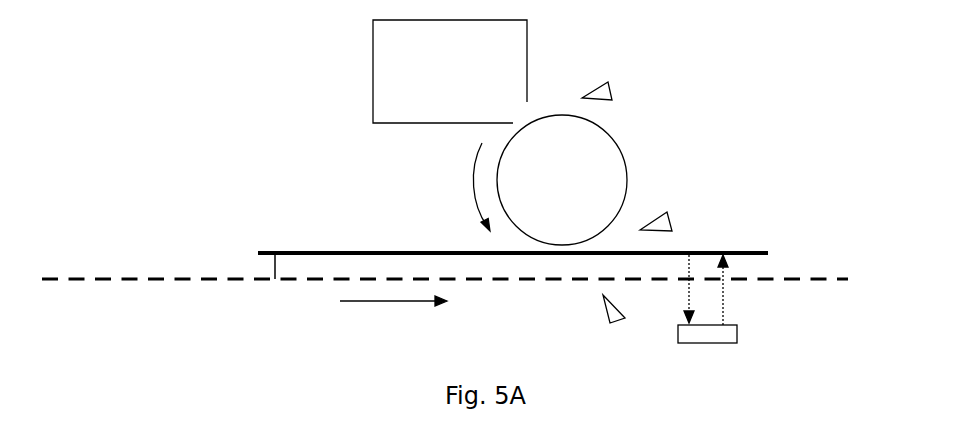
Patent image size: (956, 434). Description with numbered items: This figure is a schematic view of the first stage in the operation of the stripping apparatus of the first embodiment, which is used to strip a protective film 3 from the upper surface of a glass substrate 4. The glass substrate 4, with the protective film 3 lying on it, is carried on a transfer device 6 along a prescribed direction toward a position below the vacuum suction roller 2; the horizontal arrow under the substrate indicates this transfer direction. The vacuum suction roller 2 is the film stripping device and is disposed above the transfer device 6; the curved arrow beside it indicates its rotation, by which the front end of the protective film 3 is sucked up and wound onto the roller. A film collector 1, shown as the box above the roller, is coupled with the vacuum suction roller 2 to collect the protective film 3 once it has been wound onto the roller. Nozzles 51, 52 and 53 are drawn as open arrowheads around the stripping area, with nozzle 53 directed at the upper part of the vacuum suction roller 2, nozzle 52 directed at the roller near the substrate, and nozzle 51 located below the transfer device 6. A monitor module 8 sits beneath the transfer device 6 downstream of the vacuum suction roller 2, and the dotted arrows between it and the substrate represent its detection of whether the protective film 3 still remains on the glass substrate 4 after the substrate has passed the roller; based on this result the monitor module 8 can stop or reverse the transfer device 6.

The film collector 1 is at (383, 88).
The vacuum suction roller 2 is at (510, 188).
The protective film 3 is at (334, 250).
The glass substrate 4 is at (297, 270).
The transfer device 6 is at (808, 276).
The monitor module 8 is at (737, 333).
The nozzle 51 is at (610, 318).
The nozzle 52 is at (670, 220).
The nozzle 53 is at (612, 92).